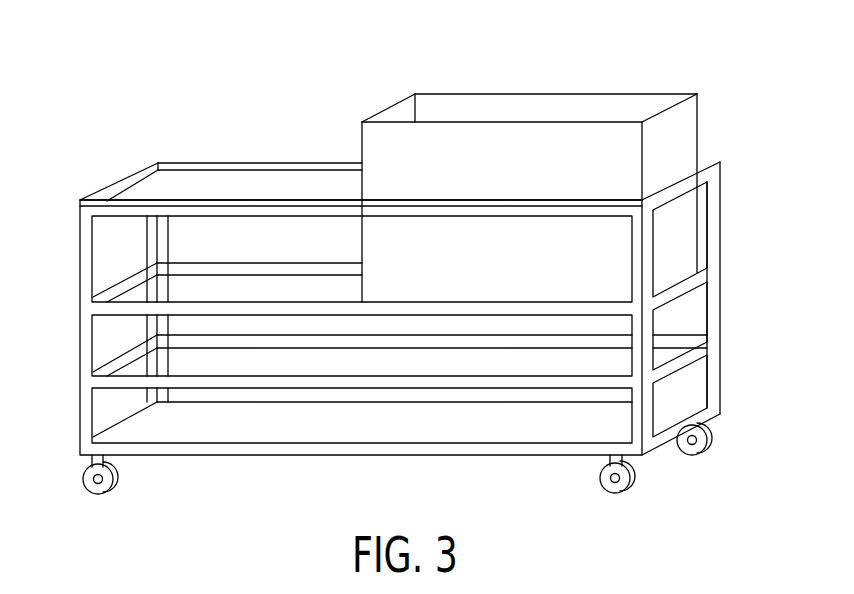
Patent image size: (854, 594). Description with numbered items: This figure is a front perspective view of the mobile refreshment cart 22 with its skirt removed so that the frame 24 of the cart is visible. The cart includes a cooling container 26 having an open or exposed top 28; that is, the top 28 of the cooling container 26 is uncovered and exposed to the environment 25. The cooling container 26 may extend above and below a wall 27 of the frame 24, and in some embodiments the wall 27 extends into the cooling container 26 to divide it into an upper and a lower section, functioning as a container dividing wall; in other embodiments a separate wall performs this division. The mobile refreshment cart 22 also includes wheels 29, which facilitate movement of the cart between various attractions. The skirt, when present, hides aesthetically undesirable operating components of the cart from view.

The mobile refreshment cart 22 is at (708, 112).
The frame 24 is at (742, 135).
The environment 25 is at (470, 81).
The cooling container 26 is at (360, 185).
The wall 27 is at (207, 185).
The top 28 is at (547, 113).
The wheels 29 is at (627, 487).